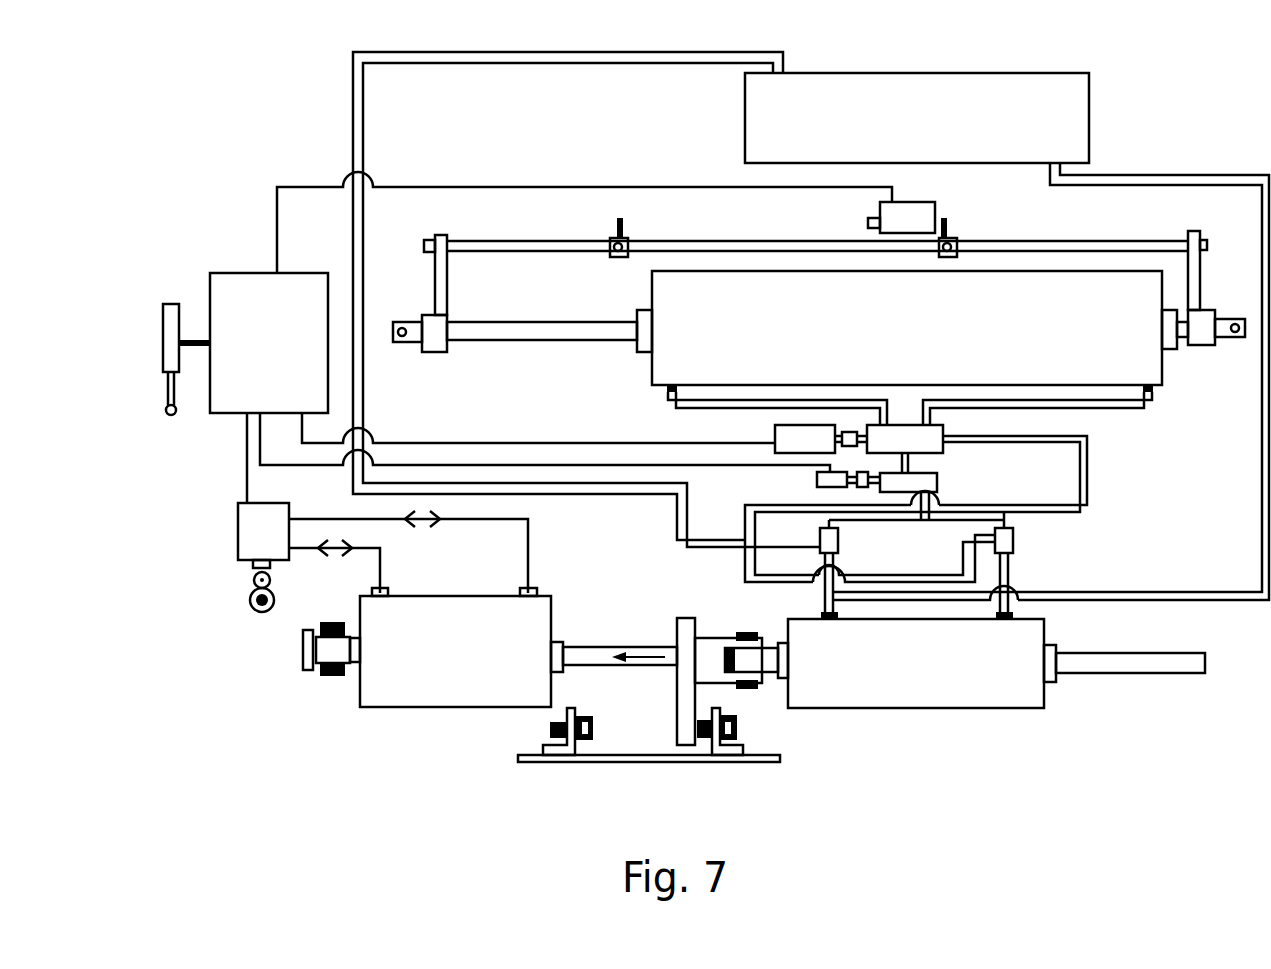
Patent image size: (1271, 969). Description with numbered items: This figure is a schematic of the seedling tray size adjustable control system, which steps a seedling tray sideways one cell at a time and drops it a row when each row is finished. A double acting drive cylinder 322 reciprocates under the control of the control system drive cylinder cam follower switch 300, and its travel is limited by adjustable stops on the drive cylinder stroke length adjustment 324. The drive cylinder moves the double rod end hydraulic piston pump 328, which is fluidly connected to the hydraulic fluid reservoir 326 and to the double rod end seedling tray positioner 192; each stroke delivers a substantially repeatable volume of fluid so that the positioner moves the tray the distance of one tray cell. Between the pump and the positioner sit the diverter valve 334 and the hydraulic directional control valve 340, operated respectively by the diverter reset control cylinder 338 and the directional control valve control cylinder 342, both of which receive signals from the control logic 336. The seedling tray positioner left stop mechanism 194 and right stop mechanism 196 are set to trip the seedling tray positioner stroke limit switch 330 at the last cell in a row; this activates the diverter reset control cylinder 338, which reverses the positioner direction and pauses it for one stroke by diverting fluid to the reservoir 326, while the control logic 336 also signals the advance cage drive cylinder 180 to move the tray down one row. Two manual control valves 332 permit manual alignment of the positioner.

The advance cage drive cylinder 180 is at (163, 333).
The double rod end seedling tray positioner 192 is at (1165, 372).
The seedling tray positioner left stop mechanism 194 is at (615, 235).
The seedling tray positioner right stop mechanism 196 is at (948, 232).
The control system drive cylinder cam follower switch 300 is at (250, 535).
The double acting drive cylinder 322 is at (427, 683).
The drive cylinder stroke length adjustment 324 is at (633, 765).
The hydraulic fluid reservoir 326 is at (880, 100).
The double rod end hydraulic piston pump 328 is at (902, 685).
The seedling tray positioner stroke limit switch 330 is at (906, 218).
The manual control valve 332 is at (838, 540).
The diverter valve 334 is at (925, 487).
The control logic 336 is at (243, 287).
The diverter reset control cylinder 338 is at (817, 482).
The hydraulic directional control valve 340 is at (932, 436).
The directional control valve control cylinder 342 is at (790, 443).